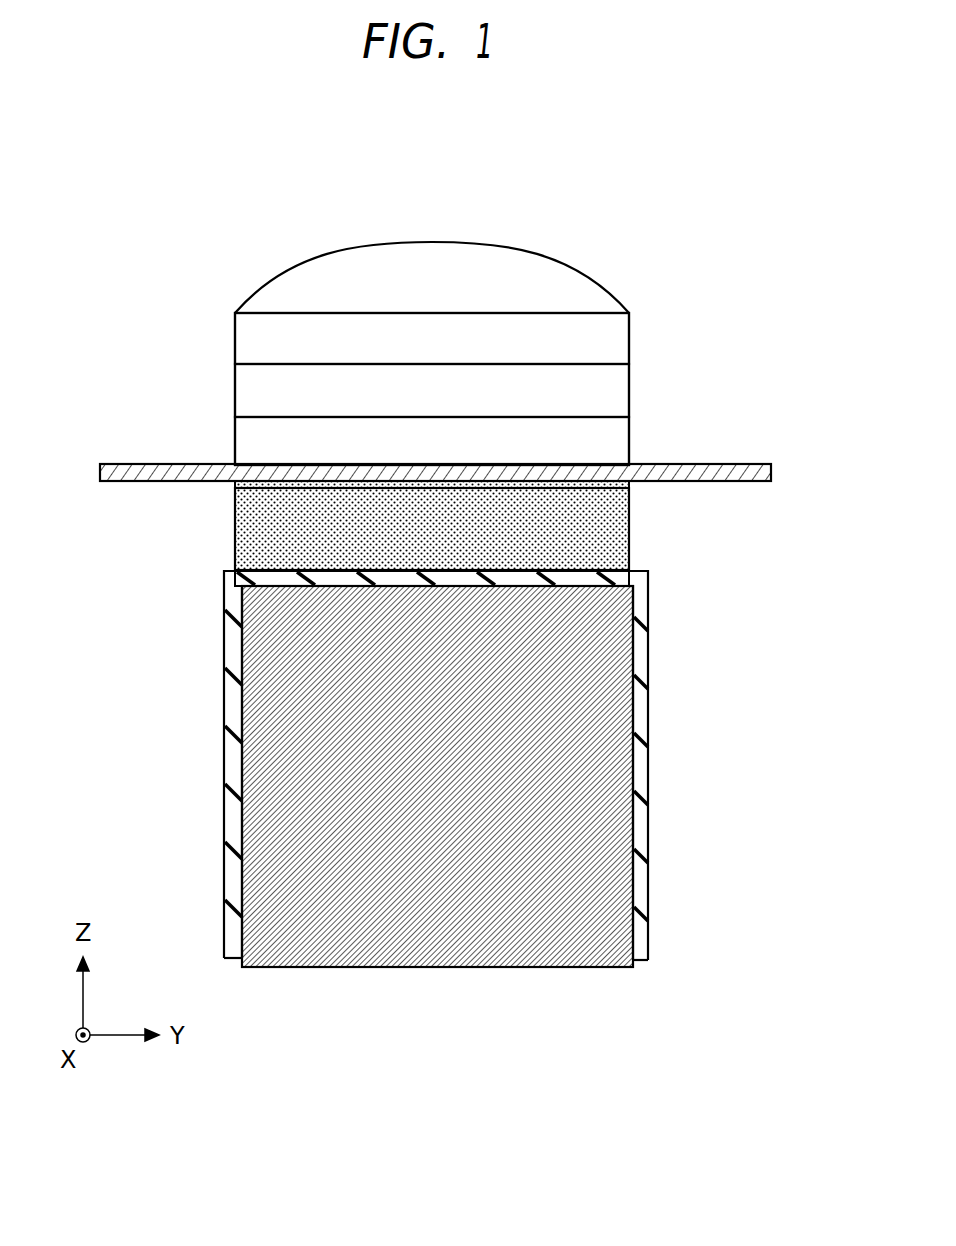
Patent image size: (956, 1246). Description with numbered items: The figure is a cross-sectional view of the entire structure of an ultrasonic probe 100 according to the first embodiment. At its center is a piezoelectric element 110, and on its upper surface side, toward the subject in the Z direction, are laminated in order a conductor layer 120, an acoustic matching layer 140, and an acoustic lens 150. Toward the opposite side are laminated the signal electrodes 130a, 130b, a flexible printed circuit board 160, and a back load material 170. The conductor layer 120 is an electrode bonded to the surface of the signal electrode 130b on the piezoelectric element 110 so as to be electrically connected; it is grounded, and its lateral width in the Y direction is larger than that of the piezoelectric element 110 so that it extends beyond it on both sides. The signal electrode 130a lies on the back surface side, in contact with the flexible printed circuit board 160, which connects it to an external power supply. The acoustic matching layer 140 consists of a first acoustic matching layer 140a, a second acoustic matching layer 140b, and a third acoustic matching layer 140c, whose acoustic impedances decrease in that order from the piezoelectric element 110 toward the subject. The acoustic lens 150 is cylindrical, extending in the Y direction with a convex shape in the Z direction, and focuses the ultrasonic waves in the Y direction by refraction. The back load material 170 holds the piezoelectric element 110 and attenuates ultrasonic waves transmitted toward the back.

The ultrasonic probe 100 is at (166, 162).
The piezoelectric element 110 is at (630, 527).
The conductor layer 120 is at (160, 483).
The signal electrode 130a is at (630, 573).
The signal electrode 130b is at (630, 485).
The acoustic matching layer 140 is at (757, 313).
The first acoustic matching layer 140a is at (630, 435).
The second acoustic matching layer 140b is at (630, 393).
The third acoustic matching layer 140c is at (630, 350).
The acoustic lens 150 is at (611, 294).
The flexible printed circuit board 160 is at (649, 610).
The back load material 170 is at (634, 712).